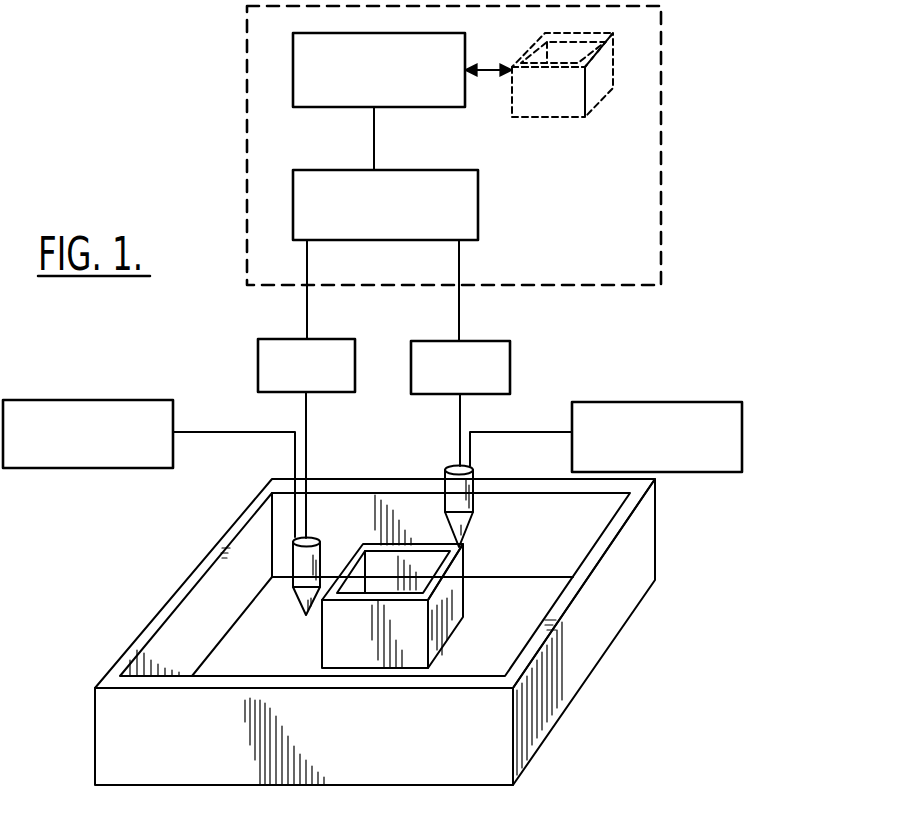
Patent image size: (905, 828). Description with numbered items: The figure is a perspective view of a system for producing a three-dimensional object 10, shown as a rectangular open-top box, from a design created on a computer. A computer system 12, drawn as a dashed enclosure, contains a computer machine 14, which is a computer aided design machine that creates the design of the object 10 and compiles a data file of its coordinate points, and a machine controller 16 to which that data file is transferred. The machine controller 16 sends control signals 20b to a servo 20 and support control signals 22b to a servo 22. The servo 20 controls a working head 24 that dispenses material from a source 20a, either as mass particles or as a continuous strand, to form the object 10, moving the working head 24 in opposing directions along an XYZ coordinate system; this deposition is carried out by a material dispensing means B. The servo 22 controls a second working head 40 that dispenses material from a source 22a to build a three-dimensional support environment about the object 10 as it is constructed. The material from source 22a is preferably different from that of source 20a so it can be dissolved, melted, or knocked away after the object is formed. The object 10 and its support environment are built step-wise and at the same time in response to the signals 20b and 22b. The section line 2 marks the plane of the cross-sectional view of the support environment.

The object 10 is at (613, 63).
The computer system 12 is at (661, 202).
The computer machine 14 is at (292, 72).
The machine controller 16 is at (478, 203).
The servo 20 is at (510, 380).
The material source 20a is at (655, 402).
The control signals 20b is at (460, 325).
The servo 22 is at (258, 361).
The material source 22a is at (95, 400).
The support control signals 22b is at (306, 309).
The working head 24 is at (473, 500).
The second working head 40 is at (297, 600).
The material dispensing means B is at (290, 534).
The section line 2- 2 is at (78, 586).